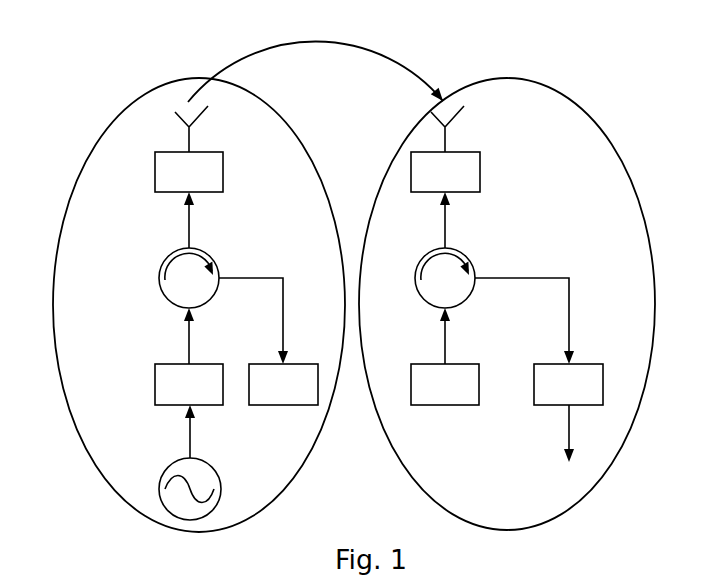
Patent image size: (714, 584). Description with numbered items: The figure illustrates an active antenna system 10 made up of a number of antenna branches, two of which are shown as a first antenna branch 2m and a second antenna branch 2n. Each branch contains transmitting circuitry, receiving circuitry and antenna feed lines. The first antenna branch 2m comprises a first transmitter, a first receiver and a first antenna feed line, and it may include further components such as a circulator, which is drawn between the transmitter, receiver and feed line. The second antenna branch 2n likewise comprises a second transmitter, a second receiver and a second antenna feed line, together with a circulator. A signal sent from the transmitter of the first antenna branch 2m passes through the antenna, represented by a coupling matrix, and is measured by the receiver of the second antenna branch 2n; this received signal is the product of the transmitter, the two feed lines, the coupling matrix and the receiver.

The antenna system 10 is at (626, 75).
The first antenna branch 2m is at (118, 140).
The second antenna branch 2n is at (620, 207).